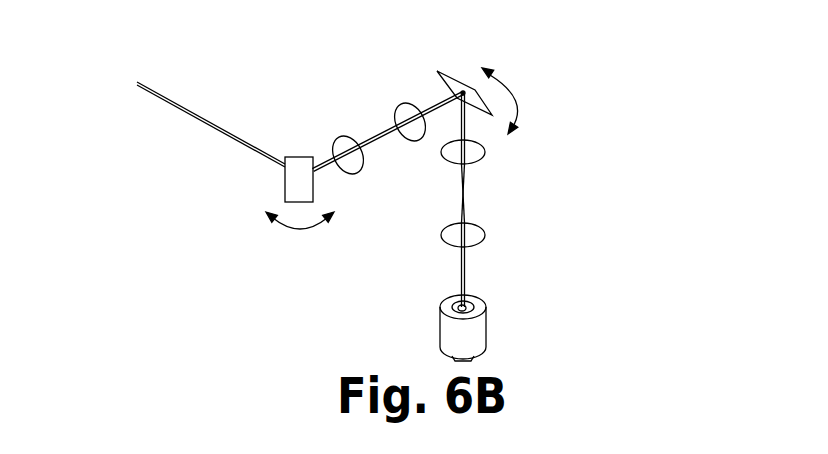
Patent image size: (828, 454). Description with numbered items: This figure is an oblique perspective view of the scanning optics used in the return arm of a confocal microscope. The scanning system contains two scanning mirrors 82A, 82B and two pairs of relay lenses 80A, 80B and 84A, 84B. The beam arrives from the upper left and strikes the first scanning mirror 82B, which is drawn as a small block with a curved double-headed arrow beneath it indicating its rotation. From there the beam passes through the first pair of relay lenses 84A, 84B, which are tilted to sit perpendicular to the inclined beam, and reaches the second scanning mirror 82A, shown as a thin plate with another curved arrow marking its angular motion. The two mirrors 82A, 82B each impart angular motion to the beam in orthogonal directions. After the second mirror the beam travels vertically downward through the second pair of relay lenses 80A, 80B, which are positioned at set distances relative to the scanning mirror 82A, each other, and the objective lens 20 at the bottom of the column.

The objective lens 20 is at (478, 332).
The relay lens 80A is at (524, 175).
The relay lens 80B is at (487, 248).
The scanning mirror 82A is at (443, 70).
The scanning mirror 82B is at (285, 193).
The relay lens 84A is at (310, 133).
The relay lens 84B is at (327, 148).